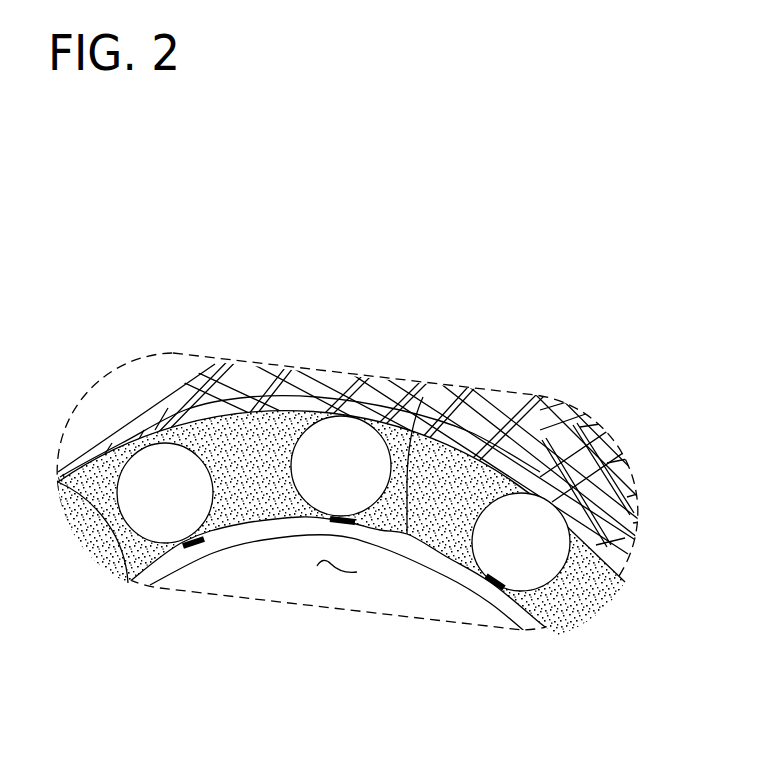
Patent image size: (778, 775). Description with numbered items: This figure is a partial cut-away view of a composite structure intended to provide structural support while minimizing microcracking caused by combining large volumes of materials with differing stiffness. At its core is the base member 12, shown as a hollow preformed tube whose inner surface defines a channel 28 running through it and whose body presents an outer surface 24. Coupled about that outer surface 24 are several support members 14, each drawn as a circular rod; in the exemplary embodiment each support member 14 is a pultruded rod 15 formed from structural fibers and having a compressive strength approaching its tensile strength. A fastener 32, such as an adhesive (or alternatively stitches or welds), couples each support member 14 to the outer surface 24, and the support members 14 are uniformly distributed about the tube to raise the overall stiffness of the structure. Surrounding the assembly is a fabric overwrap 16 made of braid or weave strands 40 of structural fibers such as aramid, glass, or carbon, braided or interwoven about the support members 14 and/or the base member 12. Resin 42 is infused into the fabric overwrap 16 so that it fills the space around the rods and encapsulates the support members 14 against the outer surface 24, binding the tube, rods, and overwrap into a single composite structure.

The base member 12 is at (447, 558).
The support member 14 is at (568, 595).
The pultruded rod 15 is at (185, 494).
The fabric overwrap 16 is at (567, 423).
The outer surface 24 is at (423, 397).
The channel 28 is at (318, 582).
The fastener 32 is at (494, 585).
The braid or weave strands 40 is at (333, 387).
The resin 42 is at (108, 537).